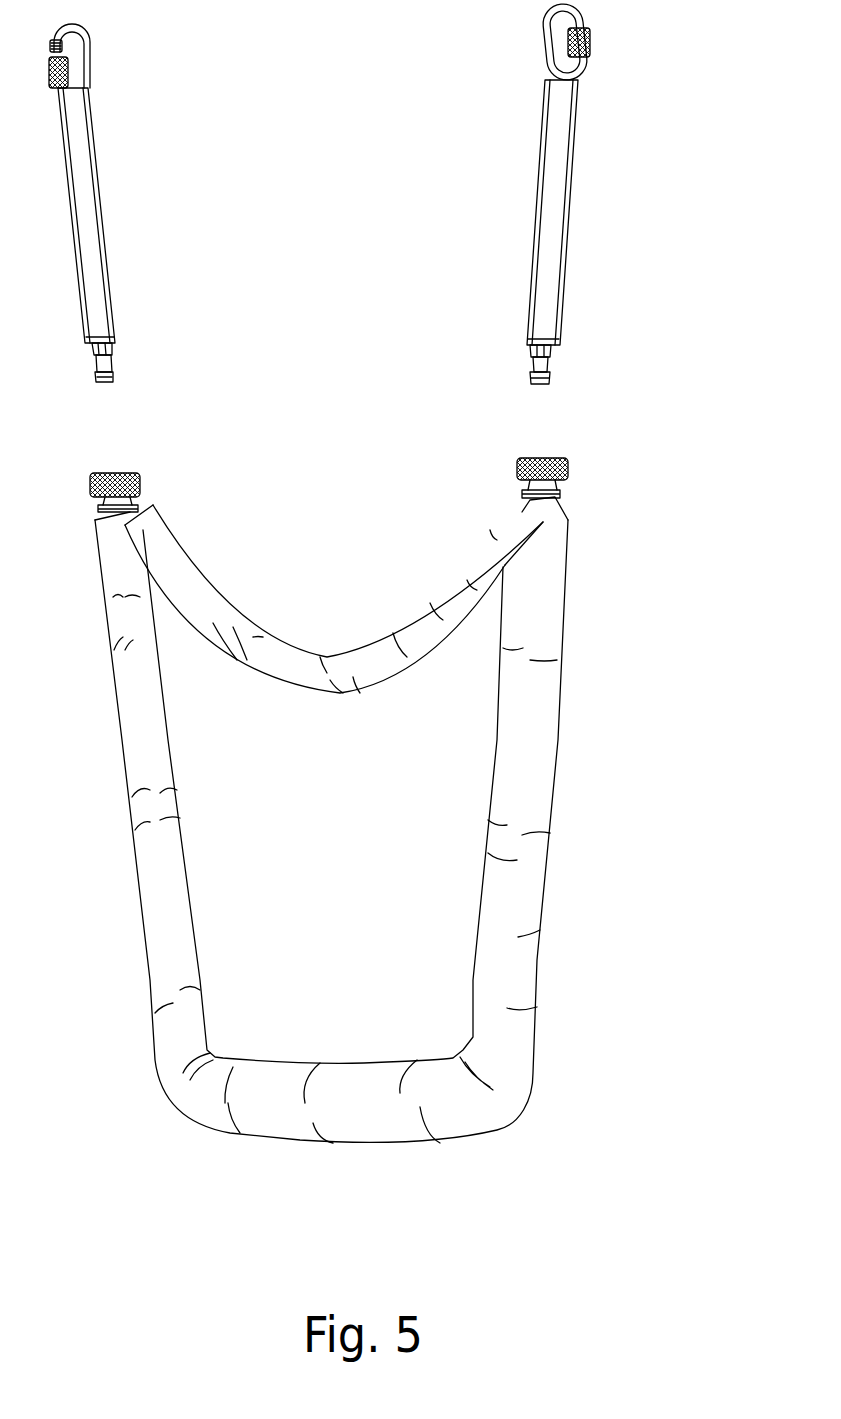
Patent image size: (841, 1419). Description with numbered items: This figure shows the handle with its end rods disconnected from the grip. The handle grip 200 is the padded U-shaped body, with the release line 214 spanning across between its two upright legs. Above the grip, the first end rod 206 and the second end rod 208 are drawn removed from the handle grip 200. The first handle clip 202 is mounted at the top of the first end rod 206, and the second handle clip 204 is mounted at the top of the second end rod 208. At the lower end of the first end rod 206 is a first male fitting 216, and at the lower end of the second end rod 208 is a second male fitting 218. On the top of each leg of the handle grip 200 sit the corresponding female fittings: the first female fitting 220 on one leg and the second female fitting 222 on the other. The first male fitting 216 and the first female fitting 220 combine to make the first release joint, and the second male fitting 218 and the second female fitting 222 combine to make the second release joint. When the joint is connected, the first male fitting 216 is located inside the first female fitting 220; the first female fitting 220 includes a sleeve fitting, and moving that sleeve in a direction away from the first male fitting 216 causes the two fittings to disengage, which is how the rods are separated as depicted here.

The handle grip 200 is at (343, 1080).
The first handle clip 202 is at (590, 38).
The second handle clip 204 is at (90, 56).
The first end rod 206 is at (570, 222).
The second end rod 208 is at (107, 205).
The release line 214 is at (317, 697).
The first male fitting 216 is at (548, 375).
The second male fitting 218 is at (112, 362).
The first female fitting 220 is at (568, 468).
The second female fitting 222 is at (140, 482).